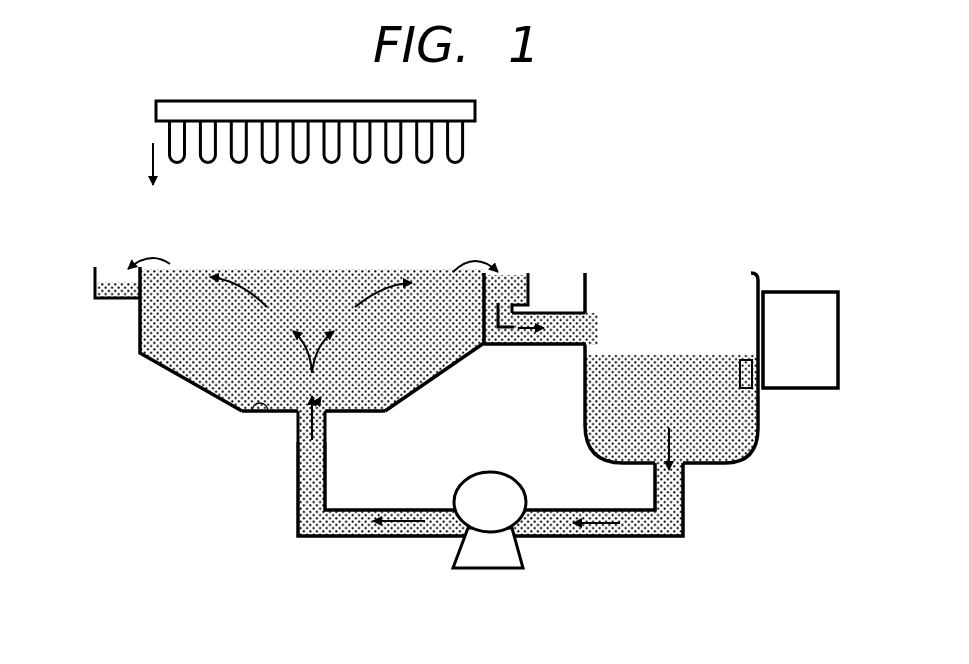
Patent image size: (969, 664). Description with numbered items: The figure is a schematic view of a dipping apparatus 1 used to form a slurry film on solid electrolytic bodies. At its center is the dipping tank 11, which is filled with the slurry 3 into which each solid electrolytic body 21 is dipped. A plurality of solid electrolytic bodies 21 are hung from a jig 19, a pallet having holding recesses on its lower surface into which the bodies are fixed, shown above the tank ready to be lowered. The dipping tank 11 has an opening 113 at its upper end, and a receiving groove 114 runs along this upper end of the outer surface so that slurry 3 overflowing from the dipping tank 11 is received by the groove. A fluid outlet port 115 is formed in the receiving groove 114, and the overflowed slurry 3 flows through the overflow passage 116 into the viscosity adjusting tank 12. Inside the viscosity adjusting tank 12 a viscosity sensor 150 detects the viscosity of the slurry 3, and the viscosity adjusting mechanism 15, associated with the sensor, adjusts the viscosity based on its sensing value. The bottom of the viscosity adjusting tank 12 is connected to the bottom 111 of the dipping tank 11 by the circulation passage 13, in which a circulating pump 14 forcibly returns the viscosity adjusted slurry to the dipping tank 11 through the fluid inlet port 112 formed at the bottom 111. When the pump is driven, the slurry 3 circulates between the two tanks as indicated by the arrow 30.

The dipping apparatus 1 is at (184, 428).
The slurry 3 is at (328, 294).
The dipping tank 11 is at (165, 370).
The bottom 111 is at (255, 414).
The fluid inlet port 112 is at (328, 409).
The opening 113 is at (480, 310).
The receiving groove 114 is at (95, 270).
The fluid outlet port 115 is at (509, 288).
The overflow passage 116 is at (530, 346).
The viscosity adjusting tank 12 is at (735, 465).
The circulation passage 13 is at (385, 540).
The circulating pump 14 is at (492, 565).
The viscosity adjusting mechanism 15 is at (806, 378).
The viscosity sensor 150 is at (747, 390).
The jig 19 is at (476, 110).
The solid electrolytic body 21 is at (166, 126).
The arrow 30 is at (140, 255).